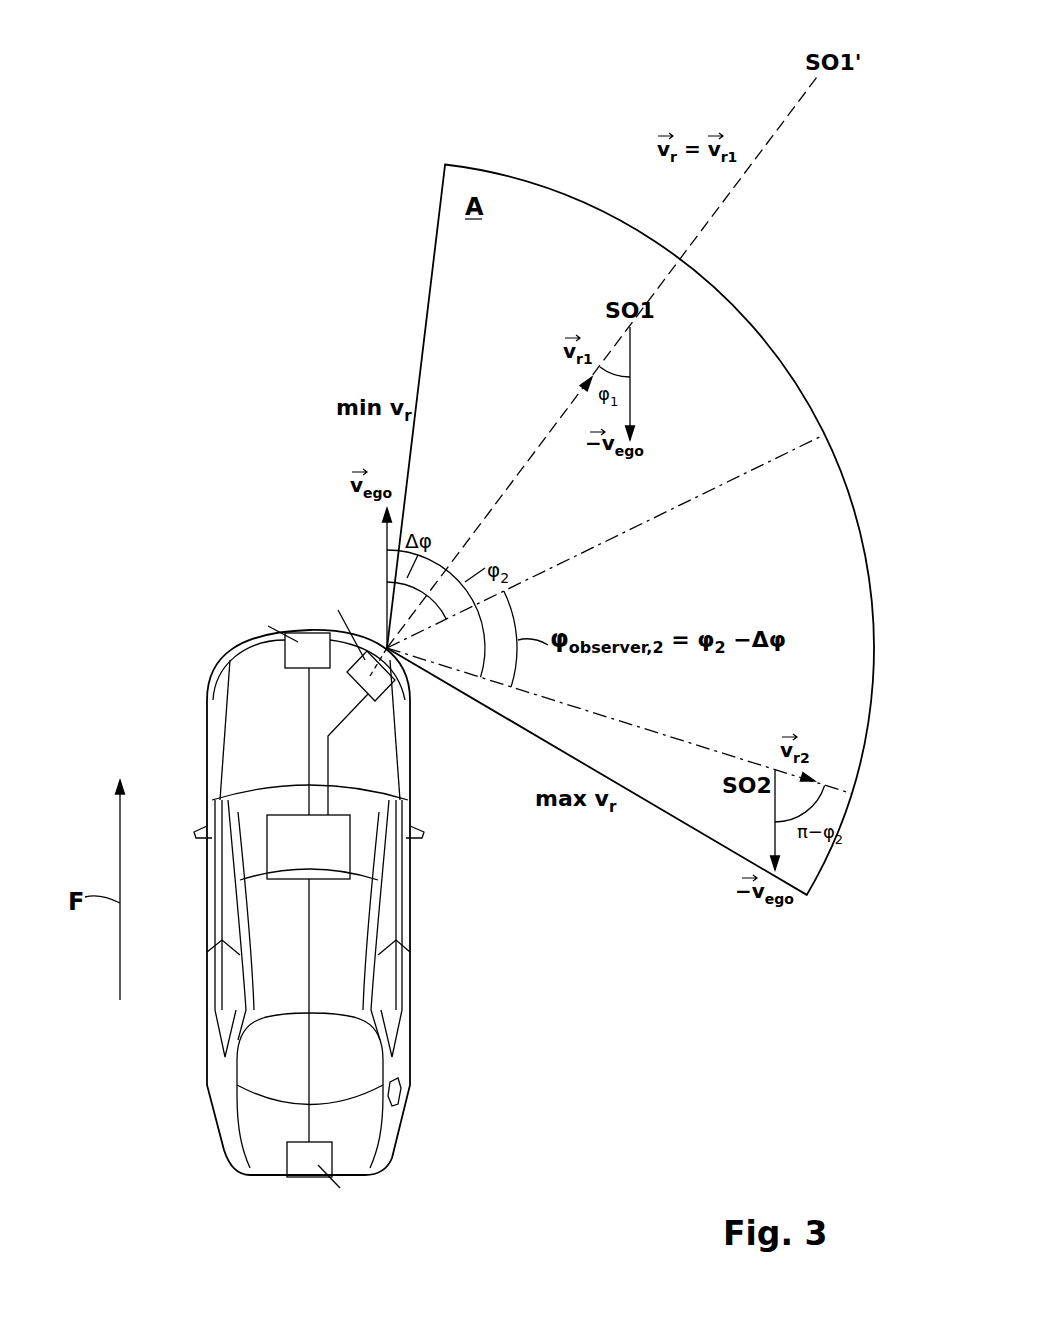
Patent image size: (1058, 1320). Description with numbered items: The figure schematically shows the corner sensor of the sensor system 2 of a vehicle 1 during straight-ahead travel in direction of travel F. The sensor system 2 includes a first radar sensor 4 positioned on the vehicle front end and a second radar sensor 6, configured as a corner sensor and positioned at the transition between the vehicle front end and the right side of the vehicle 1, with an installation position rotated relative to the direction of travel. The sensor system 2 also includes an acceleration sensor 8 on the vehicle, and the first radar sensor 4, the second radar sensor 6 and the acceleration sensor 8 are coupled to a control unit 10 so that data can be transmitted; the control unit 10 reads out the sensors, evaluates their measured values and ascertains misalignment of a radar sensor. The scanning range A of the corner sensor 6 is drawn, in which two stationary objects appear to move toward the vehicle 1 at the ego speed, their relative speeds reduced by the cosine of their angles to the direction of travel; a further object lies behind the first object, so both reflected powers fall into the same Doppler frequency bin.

The vehicle 1 is at (170, 751).
The sensor system 2 is at (397, 757).
The first radar sensor 4 is at (228, 657).
The second radar sensor 6 is at (392, 688).
The acceleration sensor 8 is at (287, 1157).
The control unit 10 is at (267, 848).